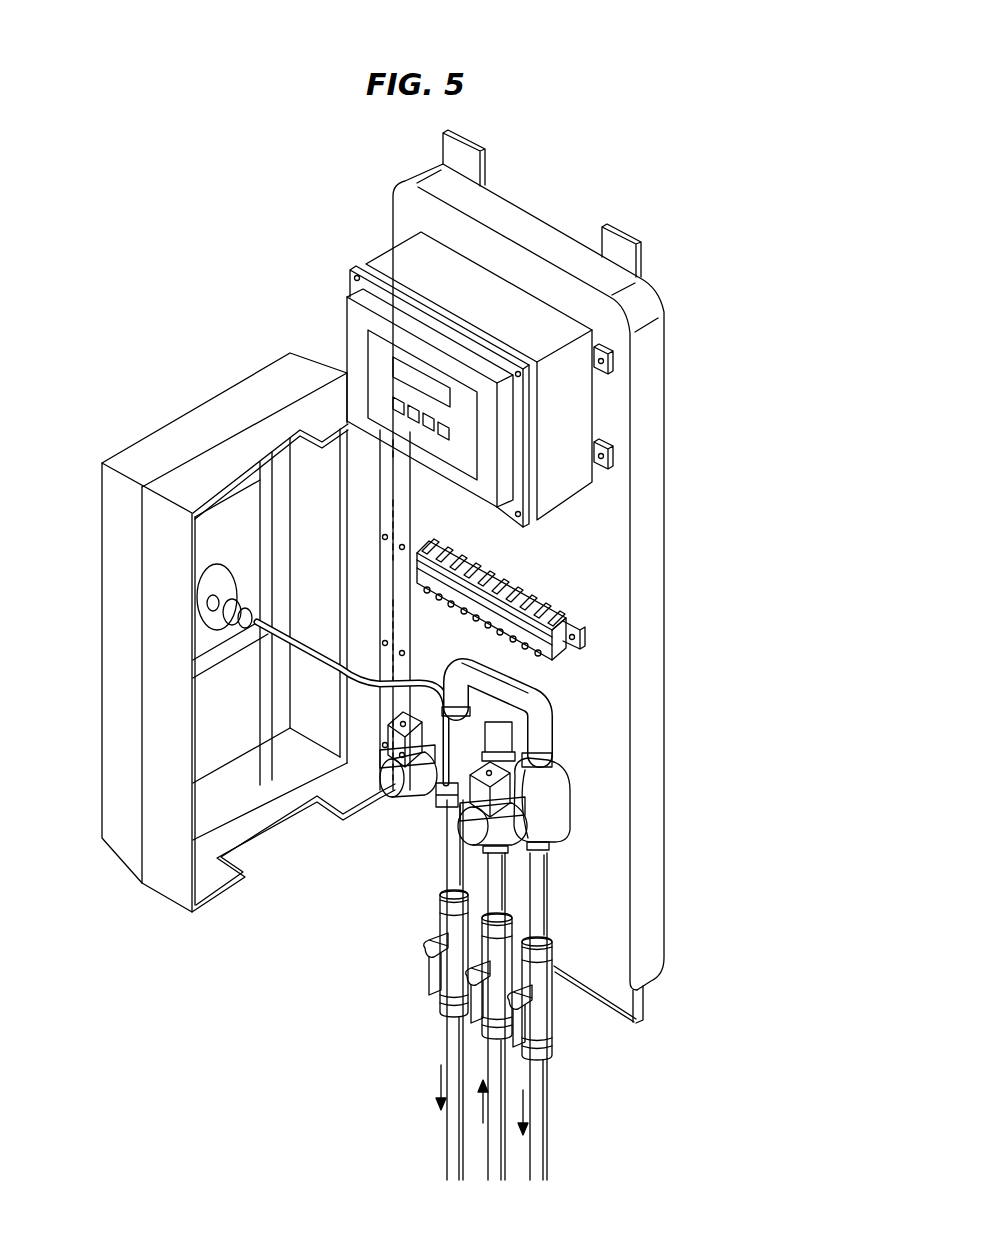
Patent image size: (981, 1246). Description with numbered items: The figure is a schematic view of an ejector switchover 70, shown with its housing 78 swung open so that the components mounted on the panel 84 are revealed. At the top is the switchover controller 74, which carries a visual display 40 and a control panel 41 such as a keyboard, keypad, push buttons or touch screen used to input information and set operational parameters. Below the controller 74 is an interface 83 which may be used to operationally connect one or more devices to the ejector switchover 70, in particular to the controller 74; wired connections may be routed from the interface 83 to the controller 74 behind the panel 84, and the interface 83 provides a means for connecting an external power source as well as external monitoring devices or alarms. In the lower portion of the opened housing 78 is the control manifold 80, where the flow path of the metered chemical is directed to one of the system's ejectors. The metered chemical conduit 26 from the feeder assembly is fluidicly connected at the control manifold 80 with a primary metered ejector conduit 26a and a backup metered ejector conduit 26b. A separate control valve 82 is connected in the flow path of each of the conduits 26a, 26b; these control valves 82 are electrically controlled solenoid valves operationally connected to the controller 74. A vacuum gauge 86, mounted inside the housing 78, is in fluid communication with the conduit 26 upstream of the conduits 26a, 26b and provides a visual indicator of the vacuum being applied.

The ejector switchover 70 is at (240, 269).
The visual display 40 is at (386, 357).
The control panel 41 is at (389, 390).
The switchover controller 74 is at (573, 408).
The housing 78 is at (117, 680).
The panel 84 is at (652, 828).
The vacuum gauge 86 is at (208, 573).
The interface 83 is at (572, 592).
The control manifold 80 is at (568, 712).
The control valve 82 is at (457, 838).
The metered chemical conduit 26 is at (495, 1133).
The metered ejector conduit 26a is at (540, 1107).
The metered ejector conduit 26b is at (455, 1040).